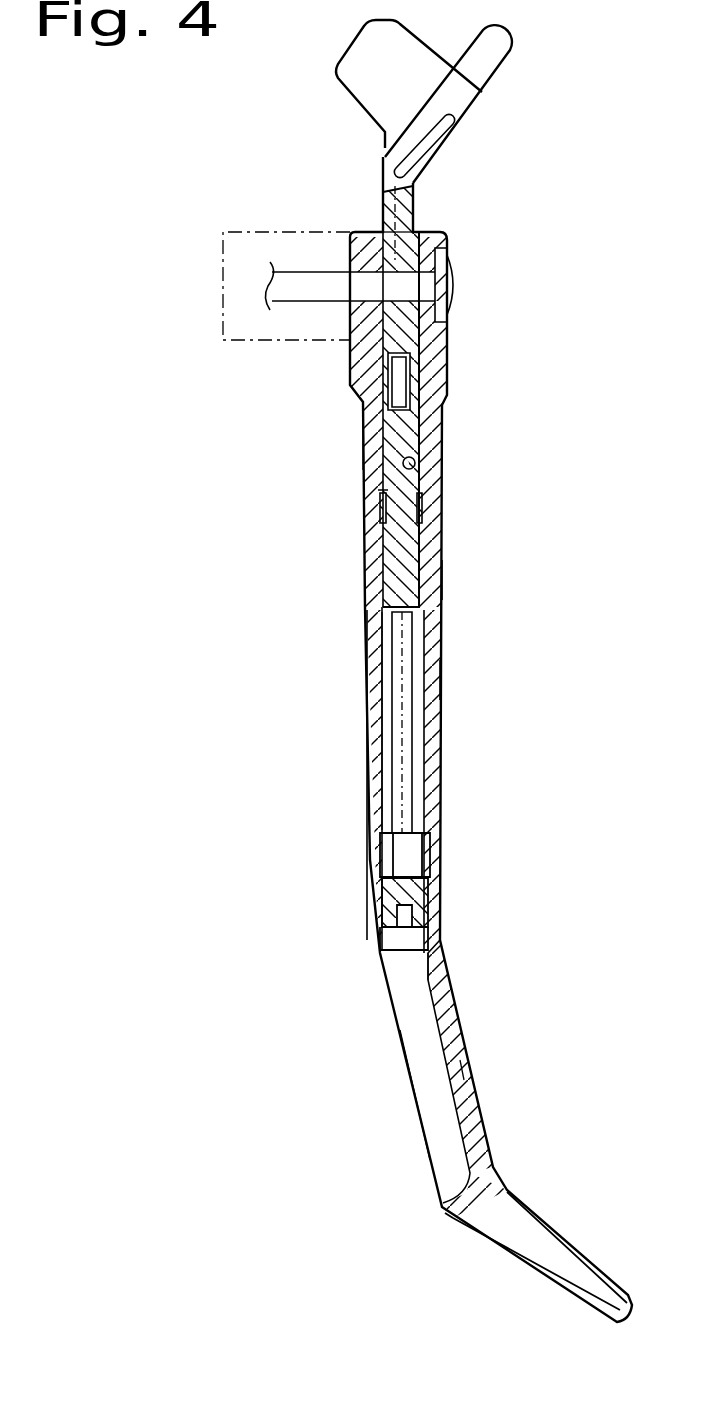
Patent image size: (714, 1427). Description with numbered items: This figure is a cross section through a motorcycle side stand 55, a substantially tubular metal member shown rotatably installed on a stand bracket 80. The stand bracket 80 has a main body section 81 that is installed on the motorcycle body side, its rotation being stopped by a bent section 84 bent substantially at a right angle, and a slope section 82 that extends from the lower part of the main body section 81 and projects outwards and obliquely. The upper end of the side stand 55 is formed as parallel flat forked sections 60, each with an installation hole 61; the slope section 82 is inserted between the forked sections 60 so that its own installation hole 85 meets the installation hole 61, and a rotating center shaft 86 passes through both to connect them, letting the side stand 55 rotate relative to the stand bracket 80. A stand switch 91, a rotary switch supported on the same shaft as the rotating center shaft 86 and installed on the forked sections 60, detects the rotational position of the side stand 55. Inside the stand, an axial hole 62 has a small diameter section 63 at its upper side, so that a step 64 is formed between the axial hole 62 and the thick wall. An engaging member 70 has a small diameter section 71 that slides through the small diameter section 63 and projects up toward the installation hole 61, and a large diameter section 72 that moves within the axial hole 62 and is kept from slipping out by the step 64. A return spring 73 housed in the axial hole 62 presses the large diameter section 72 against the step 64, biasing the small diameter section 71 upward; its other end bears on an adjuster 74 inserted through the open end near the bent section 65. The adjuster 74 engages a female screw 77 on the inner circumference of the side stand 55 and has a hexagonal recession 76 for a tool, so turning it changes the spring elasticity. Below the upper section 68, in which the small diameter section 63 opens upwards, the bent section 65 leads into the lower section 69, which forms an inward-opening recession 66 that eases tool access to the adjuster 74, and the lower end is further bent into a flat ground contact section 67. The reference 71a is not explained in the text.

The stand bracket 80 is at (276, 103).
The main body section 81 is at (478, 93).
The bent section 84 is at (408, 63).
The forked sections 60 is at (370, 230).
The installation hole 61 is at (356, 240).
The stand switch 91 is at (275, 232).
The installation hole 85 is at (447, 304).
The rotating center shaft 86 is at (458, 285).
The slope section 82 is at (415, 323).
The slot 71a is at (362, 388).
The small diameter section 71 is at (377, 447).
The small diameter section 63 is at (428, 470).
The engaging member 70 is at (378, 497).
The step 64 is at (426, 490).
The side stand 55 is at (365, 590).
The large diameter section 72 is at (428, 570).
The return spring 73 is at (390, 690).
The upper section 68 is at (440, 667).
The axial hole 62 is at (412, 733).
The female screw 77 is at (380, 857).
The adjuster 74 is at (395, 903).
The hexagonal recession 76 is at (393, 935).
The bent section 65 is at (445, 932).
The lower section 69 is at (473, 1060).
The recession 66 is at (423, 1100).
The ground contact section 67 is at (540, 1217).